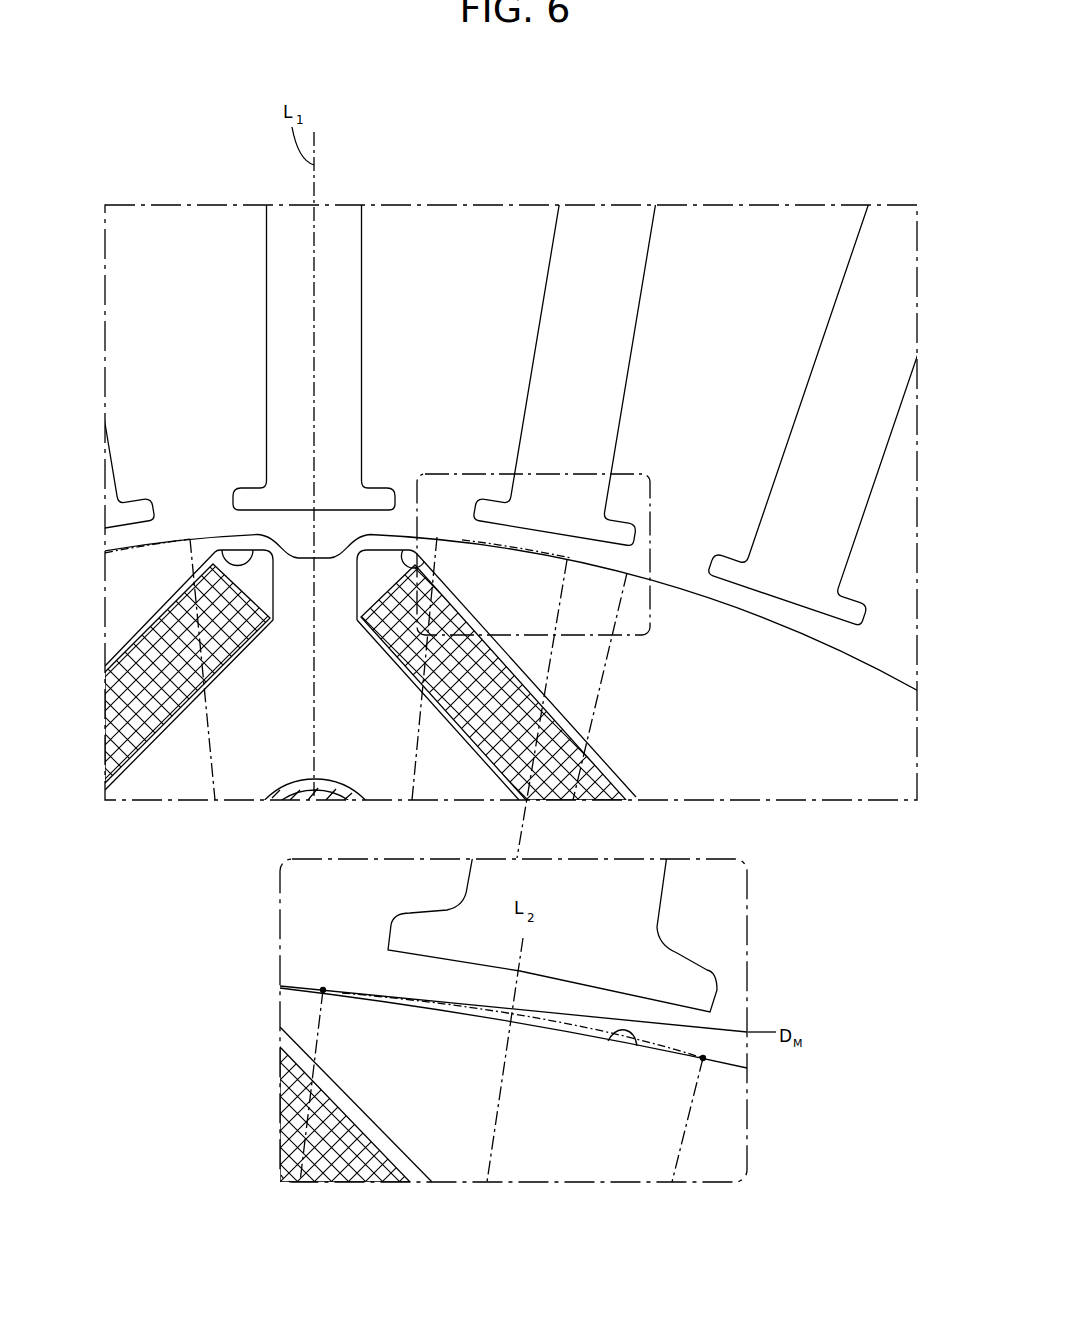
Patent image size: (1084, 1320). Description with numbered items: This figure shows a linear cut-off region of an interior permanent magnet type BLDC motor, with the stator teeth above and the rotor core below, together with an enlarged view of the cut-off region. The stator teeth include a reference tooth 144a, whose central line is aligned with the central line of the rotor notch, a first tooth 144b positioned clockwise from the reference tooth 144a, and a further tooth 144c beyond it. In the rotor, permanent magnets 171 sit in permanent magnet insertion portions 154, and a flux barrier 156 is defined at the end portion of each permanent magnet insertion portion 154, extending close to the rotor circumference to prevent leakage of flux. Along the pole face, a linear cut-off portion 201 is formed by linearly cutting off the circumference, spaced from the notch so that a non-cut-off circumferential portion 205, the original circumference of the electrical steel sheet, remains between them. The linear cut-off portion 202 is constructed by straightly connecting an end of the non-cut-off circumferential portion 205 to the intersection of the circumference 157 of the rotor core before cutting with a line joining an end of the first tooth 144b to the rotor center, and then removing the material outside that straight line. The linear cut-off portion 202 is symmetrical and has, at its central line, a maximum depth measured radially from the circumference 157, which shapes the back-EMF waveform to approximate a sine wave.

The reference tooth 144a is at (338, 490).
The first tooth 144b is at (542, 510).
The tooth 144c is at (786, 592).
The flux barrier 156 is at (222, 550).
The linear cut-off portion 201 is at (293, 540).
The linear cut-off portion 202 is at (567, 560).
The permanent magnet 171 is at (144, 718).
The permanent magnet insertion portion 154 is at (150, 750).
The non-cut-off circumferential portion 205 is at (308, 988).
The circumference of the rotor core 157 is at (638, 1047).